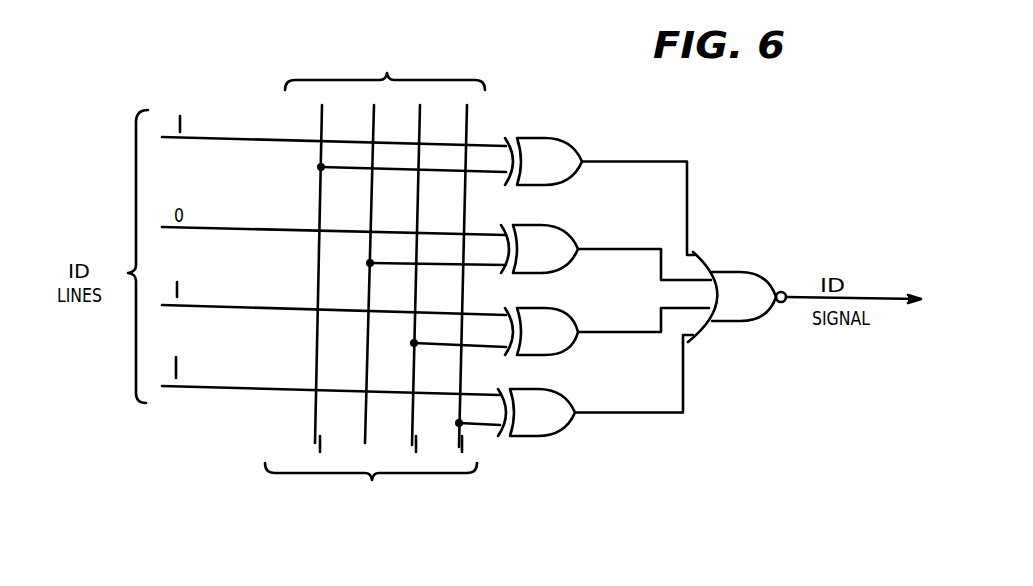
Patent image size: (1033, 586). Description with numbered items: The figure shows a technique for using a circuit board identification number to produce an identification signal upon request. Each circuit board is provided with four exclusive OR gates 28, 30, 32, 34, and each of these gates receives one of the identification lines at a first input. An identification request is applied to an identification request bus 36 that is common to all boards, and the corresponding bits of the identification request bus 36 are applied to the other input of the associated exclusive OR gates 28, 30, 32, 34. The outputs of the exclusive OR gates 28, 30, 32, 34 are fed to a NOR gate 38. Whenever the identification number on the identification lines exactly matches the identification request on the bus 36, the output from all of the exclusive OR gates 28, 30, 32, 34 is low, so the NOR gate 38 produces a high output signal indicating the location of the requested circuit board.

The exclusive OR gate 28 is at (567, 137).
The exclusive OR gate 30 is at (571, 229).
The exclusive OR gate 32 is at (581, 316).
The exclusive OR gate 34 is at (569, 398).
The identification request bus 36 is at (375, 295).
The NOR gate 38 is at (750, 272).